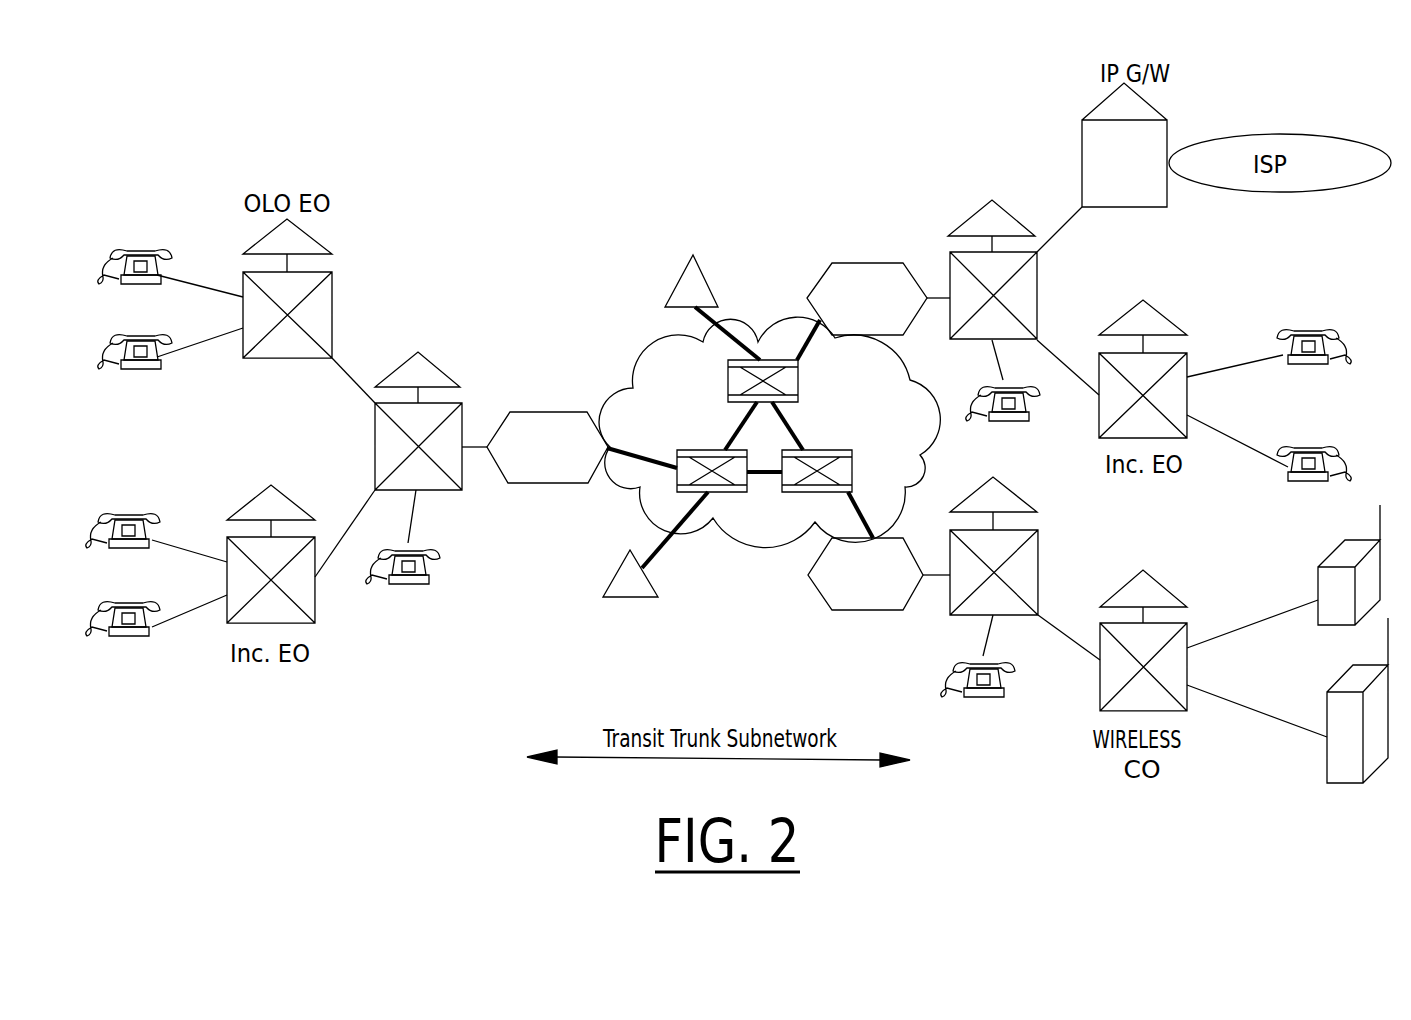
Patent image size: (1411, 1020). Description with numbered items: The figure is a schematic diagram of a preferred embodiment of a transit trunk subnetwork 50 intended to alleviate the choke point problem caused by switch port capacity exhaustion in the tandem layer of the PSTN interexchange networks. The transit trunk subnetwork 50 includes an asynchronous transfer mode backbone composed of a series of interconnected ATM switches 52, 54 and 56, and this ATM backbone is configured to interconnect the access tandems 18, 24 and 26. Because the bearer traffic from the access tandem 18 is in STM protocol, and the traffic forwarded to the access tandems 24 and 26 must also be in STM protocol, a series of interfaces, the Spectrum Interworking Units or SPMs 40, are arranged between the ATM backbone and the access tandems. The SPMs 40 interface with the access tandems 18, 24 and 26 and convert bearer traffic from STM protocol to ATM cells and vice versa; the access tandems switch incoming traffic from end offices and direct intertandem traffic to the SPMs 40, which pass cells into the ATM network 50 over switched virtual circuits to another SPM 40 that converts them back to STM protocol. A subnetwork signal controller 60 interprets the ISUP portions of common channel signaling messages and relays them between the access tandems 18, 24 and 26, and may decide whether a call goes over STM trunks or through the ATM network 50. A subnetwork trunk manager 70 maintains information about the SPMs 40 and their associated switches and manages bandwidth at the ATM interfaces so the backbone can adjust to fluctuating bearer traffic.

The access tandem 18 is at (440, 363).
The access tandem 24 is at (948, 252).
The access tandem 26 is at (950, 615).
The Spectrum Interworking Unit (SPM) 40 is at (548, 487).
The transit trunk subnetwork 50 is at (640, 347).
The ATM switch 52 is at (798, 387).
The ATM switch 54 is at (852, 472).
The ATM switch 56 is at (675, 465).
The subnetwork signal controller (SSC) 60 is at (627, 604).
The subnetwork trunk manager (STM) 70 is at (695, 253).